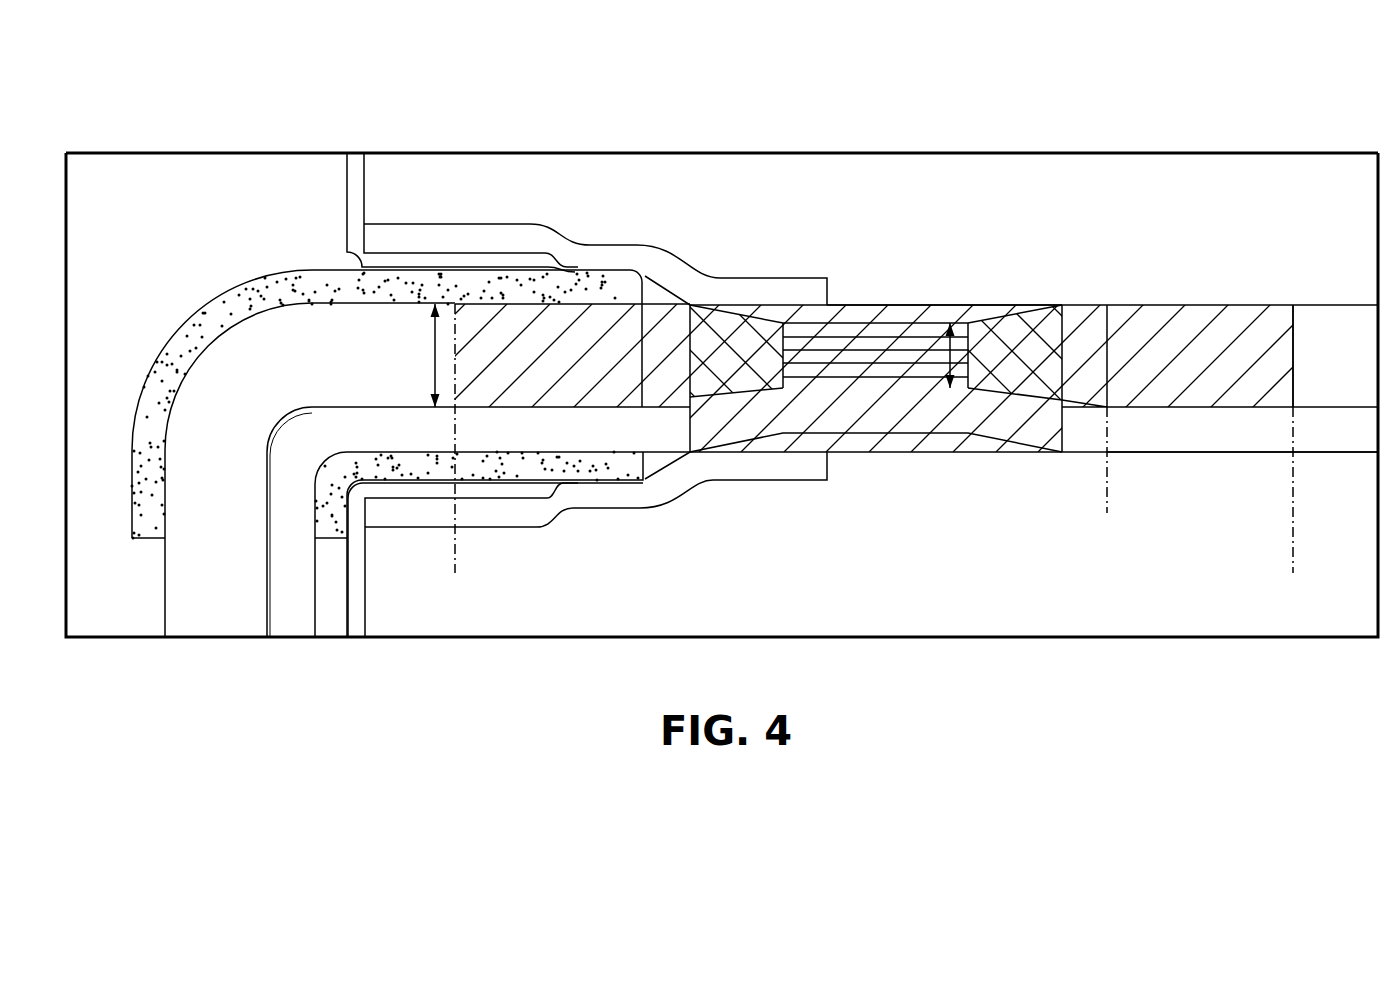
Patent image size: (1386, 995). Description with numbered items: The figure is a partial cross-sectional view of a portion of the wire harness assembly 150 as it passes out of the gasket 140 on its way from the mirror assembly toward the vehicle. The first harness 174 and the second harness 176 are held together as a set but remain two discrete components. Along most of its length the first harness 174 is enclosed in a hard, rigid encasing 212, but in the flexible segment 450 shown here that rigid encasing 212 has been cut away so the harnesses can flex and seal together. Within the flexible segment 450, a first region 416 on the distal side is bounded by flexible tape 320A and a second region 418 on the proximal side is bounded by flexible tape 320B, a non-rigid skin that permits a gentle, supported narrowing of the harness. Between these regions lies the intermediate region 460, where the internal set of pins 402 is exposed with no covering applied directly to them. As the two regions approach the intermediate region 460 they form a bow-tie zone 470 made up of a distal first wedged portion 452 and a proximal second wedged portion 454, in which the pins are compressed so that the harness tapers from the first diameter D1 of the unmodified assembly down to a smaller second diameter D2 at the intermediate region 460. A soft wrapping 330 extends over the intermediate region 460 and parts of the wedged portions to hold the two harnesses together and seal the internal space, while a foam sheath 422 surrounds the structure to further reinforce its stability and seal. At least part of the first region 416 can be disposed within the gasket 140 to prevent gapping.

The gasket 140 is at (340, 206).
The wire harness assembly 150 is at (153, 611).
The rigid encasing 212 is at (192, 570).
The flexible tape 320A is at (587, 317).
The flexible tape 320B is at (1237, 318).
The soft wrapping 330 is at (912, 317).
The internal set of pins 402 is at (833, 351).
The first region 416 is at (571, 366).
The second region 418 is at (1221, 366).
The foam sheath 422 is at (633, 245).
The flexible segment 450 is at (1293, 573).
The first wedged portion 452 is at (441, 137).
The second wedged portion 454 is at (1070, 337).
The intermediate region 460 is at (968, 294).
The bow-tie zone 470 is at (1107, 513).
The first harness 174 is at (1305, 378).
The second harness 176 is at (1183, 430).
The first diameter D1 is at (433, 349).
The second diameter D2 is at (947, 352).